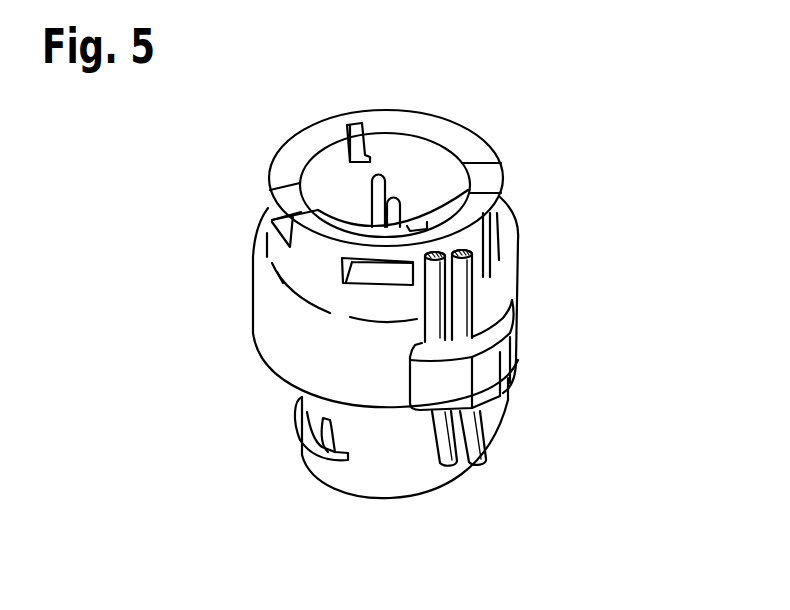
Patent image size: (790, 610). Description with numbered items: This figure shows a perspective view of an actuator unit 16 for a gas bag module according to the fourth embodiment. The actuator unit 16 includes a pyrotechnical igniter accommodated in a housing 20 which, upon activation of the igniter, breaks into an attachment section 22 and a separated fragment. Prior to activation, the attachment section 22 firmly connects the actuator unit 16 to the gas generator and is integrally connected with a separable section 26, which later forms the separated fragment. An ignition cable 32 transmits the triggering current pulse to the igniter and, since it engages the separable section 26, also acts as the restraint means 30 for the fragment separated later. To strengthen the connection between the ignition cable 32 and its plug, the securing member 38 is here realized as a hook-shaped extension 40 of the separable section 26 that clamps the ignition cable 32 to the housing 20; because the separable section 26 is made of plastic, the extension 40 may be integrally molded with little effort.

The actuator unit 16 is at (205, 207).
The housing 20 is at (274, 386).
The attachment section 22 is at (418, 482).
The separable section 26 is at (275, 320).
The restraint means 30 is at (528, 358).
The ignition cable 32 is at (462, 280).
The securing member 38 is at (534, 364).
The extension 40 is at (485, 385).